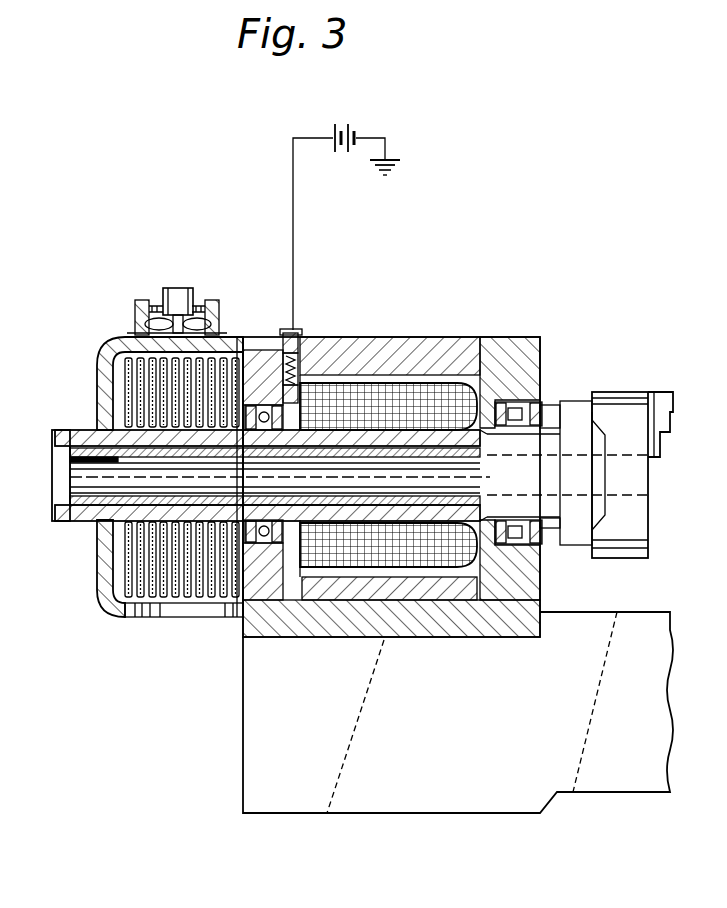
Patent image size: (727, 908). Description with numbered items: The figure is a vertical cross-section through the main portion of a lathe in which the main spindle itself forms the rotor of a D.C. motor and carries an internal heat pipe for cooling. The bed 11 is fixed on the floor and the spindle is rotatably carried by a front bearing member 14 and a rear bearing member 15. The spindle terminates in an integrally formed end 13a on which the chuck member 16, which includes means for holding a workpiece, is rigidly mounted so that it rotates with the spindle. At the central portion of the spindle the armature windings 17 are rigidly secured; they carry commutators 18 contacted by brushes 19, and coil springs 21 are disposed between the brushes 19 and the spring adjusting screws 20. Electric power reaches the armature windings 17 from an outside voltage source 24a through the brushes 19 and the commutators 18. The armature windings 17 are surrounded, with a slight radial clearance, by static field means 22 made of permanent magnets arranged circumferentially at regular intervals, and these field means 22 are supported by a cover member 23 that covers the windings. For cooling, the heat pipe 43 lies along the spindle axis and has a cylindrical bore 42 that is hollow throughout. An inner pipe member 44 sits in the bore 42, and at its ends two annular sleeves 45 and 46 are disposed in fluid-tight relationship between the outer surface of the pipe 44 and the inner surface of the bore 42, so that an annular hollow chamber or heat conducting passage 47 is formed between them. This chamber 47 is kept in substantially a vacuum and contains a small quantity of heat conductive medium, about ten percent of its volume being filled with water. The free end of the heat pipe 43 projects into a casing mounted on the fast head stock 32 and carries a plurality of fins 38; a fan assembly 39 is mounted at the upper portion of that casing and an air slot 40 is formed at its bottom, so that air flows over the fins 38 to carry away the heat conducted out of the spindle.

The bed 11 is at (441, 813).
The end of main spindle 13a is at (575, 417).
The front bearing member 14 is at (538, 400).
The rear bearing member 15 is at (250, 412).
The chuck member 16 is at (633, 413).
The armature windings 17 is at (405, 410).
The commutators 18 is at (330, 340).
The brushes 19 is at (275, 415).
The spring adjusting screws 20 is at (292, 340).
The coil springs 21 is at (288, 330).
The static field means 22 is at (364, 366).
The cover member 23 is at (513, 337).
The outside voltage source 24a is at (346, 123).
The fast head stock 32 is at (336, 338).
The fins 38 is at (100, 588).
The fan assembly 39 is at (177, 288).
The air slot 40 is at (153, 617).
The cylindrical bore 42 is at (381, 408).
The heat pipe 43 is at (213, 440).
The inner pipe member 44 is at (52, 462).
The annular sleeve 45 is at (89, 462).
The annular sleeve 46 is at (470, 337).
The annular hollow chamber 47 is at (100, 506).